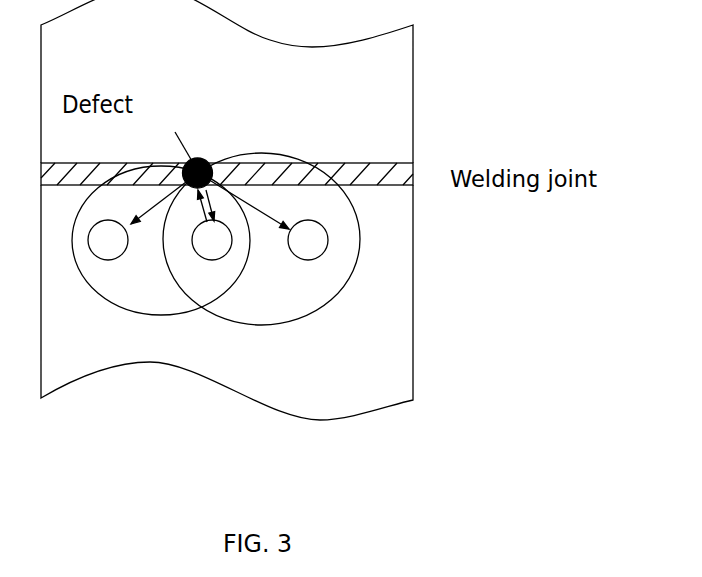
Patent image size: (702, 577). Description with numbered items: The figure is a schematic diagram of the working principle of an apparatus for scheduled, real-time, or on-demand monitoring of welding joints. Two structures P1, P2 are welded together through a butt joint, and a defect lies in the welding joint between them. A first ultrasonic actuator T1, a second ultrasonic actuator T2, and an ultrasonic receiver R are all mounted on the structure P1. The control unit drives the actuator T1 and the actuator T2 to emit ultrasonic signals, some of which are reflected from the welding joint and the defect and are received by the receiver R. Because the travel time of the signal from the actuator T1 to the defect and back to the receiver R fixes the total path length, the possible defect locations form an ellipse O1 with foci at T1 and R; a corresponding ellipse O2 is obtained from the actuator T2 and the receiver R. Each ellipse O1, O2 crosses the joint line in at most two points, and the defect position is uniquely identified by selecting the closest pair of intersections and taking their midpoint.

The structure P1 is at (227, 302).
The structure P2 is at (227, 81).
The first ultrasonic actuator T1 is at (137, 221).
The second ultrasonic actuator T2 is at (269, 220).
The ultrasonic receiver R is at (212, 225).
The ellipse O1 is at (161, 240).
The ellipse O2 is at (261, 239).